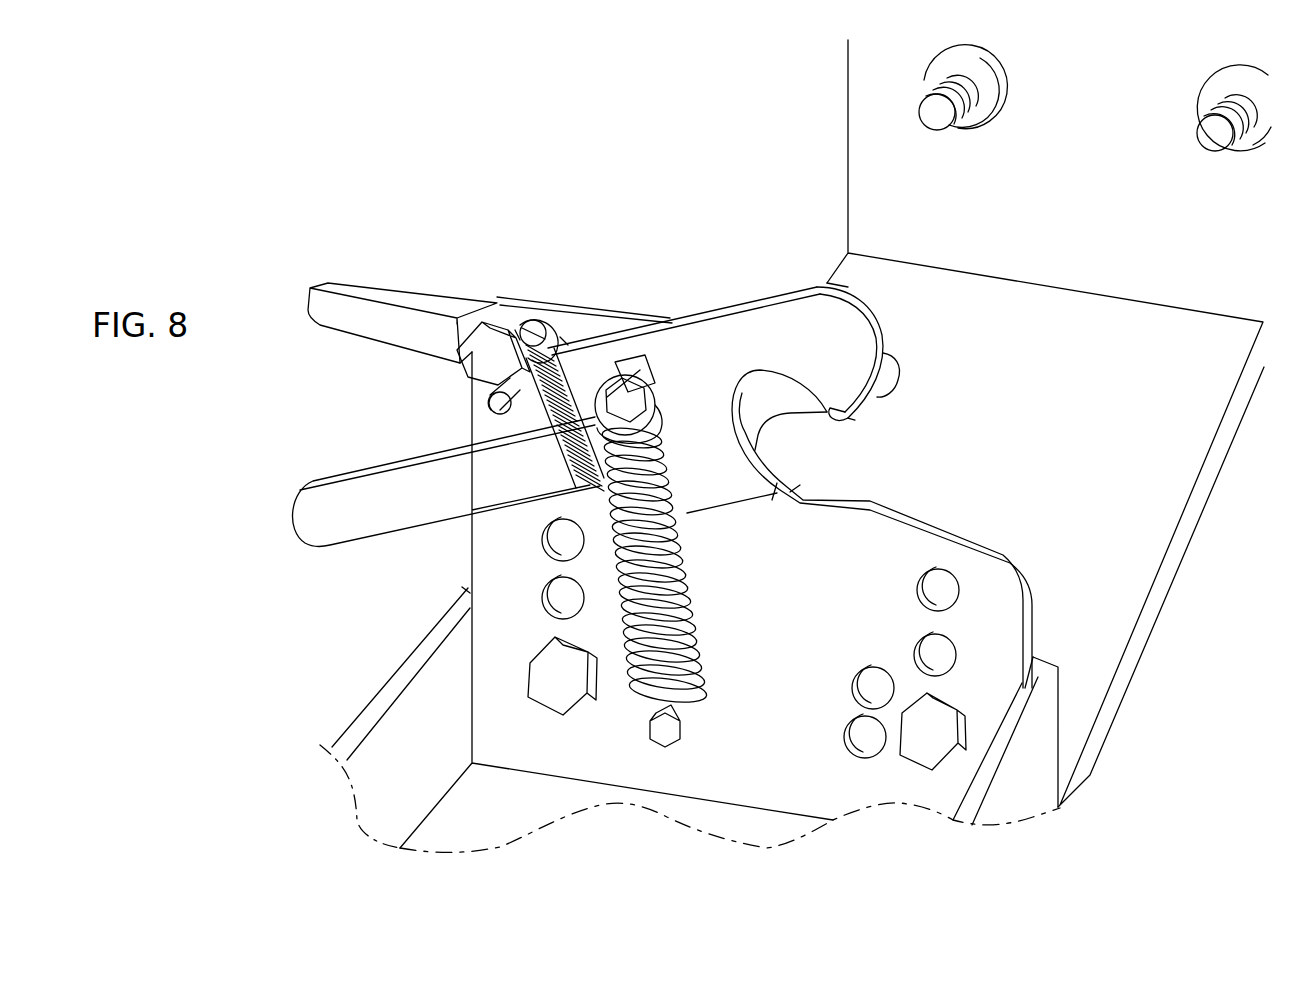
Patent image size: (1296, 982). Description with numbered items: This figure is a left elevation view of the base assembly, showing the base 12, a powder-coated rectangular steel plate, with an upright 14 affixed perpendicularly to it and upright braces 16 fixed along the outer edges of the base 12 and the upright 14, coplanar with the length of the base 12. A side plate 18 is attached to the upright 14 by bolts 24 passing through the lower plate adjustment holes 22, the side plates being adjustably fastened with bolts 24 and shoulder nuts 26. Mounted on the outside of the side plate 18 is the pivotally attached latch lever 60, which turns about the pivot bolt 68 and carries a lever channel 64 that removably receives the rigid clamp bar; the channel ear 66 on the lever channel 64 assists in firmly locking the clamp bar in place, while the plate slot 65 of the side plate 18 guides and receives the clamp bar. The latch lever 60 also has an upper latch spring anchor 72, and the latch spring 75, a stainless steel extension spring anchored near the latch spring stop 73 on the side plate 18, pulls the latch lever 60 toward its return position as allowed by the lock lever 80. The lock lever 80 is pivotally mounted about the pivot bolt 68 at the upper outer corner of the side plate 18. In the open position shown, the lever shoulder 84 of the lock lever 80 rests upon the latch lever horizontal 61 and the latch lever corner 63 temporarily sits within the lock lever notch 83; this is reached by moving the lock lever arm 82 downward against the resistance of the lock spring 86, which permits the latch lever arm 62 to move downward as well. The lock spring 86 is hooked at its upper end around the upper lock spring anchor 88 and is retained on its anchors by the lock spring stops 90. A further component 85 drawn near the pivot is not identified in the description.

The base 12 is at (1148, 636).
The upright 14 is at (1037, 657).
The upright brace 16 is at (375, 705).
The side plate 18 is at (1007, 567).
The lower plate adjustment holes 22 is at (540, 537).
The bolts 24 is at (553, 663).
The shoulder nuts 26 is at (937, 67).
The latch lever 60 is at (782, 284).
The latch lever horizontal 61 is at (850, 293).
The latch lever arm 62 is at (338, 482).
The latch lever corner 63 is at (528, 367).
The lever channel 64 is at (788, 372).
The plate slot 65 is at (758, 447).
The channel ear 66 is at (857, 412).
The pivot bolt 68 is at (527, 313).
The upper latch spring anchor 72 is at (647, 377).
The latch spring stop 73 is at (645, 380).
The latch spring 75 is at (677, 397).
The lock lever 80 is at (484, 300).
The lock lever arm 82 is at (372, 293).
The lock lever notch 83 is at (510, 382).
The lever shoulder 84 is at (555, 318).
The hex nut 85 is at (510, 317).
The lock spring 86 is at (560, 337).
The upper lock spring anchor 88 is at (560, 310).
The lock spring stops 90 is at (529, 318).